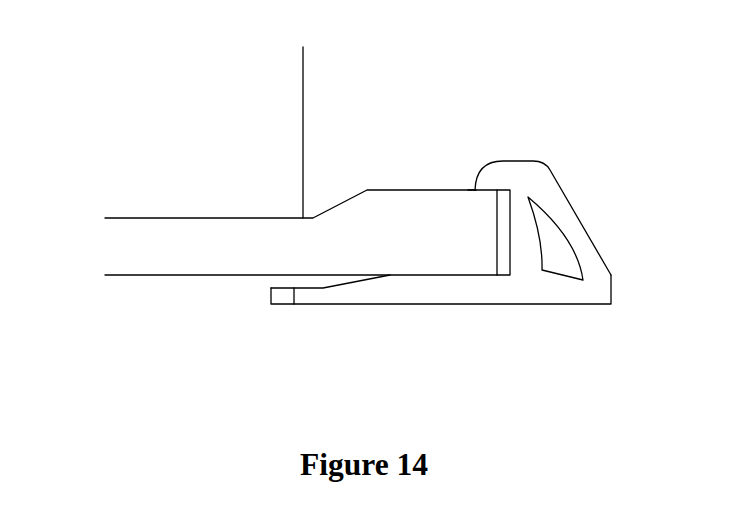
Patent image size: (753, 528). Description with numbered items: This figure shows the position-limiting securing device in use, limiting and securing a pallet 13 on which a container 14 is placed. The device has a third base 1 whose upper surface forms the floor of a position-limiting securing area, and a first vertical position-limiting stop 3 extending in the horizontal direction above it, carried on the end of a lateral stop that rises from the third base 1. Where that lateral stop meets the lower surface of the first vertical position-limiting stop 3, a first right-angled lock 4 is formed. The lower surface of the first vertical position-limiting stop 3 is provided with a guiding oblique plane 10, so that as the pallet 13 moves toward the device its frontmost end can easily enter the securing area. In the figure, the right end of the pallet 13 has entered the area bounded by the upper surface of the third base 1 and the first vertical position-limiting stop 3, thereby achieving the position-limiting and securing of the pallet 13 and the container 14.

The third base 1 is at (455, 281).
The first vertical position-limiting stop 3 is at (505, 170).
The first right-angled lock 4 is at (510, 192).
The guiding oblique plane 10 is at (475, 188).
The pallet 13 is at (218, 241).
The container 14 is at (303, 122).